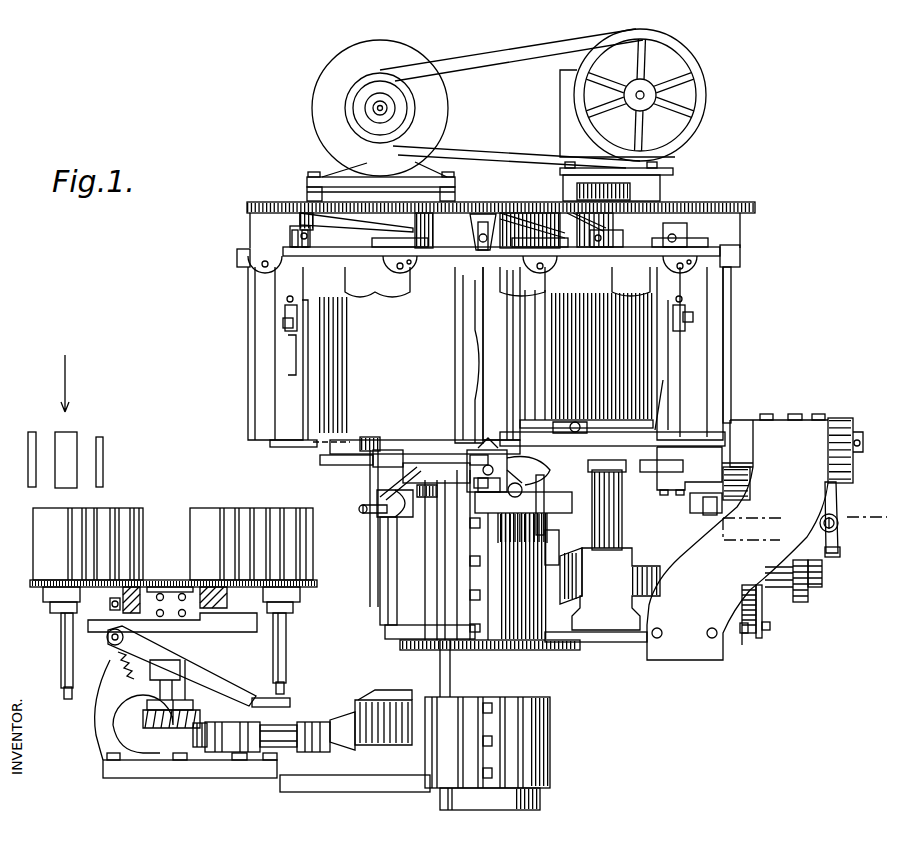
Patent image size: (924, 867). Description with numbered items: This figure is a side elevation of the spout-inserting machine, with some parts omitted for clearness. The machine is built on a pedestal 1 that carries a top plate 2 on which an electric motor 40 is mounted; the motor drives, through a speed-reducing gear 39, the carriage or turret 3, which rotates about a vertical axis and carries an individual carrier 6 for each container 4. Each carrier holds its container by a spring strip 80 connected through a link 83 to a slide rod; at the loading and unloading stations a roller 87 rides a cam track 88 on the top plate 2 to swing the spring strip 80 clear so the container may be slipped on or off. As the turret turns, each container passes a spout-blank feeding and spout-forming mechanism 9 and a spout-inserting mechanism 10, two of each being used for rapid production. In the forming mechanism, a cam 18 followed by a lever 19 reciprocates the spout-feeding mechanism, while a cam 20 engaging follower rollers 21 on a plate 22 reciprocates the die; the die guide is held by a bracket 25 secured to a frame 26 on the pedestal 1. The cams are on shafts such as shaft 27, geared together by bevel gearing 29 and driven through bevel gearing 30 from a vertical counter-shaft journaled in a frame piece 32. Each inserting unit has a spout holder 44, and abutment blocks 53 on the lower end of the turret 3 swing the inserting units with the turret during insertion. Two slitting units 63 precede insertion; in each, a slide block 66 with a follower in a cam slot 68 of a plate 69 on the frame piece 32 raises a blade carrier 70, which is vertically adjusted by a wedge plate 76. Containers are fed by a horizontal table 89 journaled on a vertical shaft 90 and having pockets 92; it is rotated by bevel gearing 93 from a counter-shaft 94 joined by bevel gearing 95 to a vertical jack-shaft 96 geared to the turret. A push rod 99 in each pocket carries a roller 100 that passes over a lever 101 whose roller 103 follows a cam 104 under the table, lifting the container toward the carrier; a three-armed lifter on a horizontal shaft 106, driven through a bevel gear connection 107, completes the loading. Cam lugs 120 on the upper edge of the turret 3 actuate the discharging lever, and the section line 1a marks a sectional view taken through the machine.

The pedestal 1 is at (450, 800).
The section line 1a is at (870, 505).
The top plate 2 is at (262, 201).
The carriage or turret 3 is at (497, 436).
The container 4 is at (757, 398).
The carrier 6 is at (411, 296).
The spout-blank feeding and spout-forming mechanism 9 is at (318, 440).
The spout-inserting mechanism 10 is at (688, 519).
The cam 18 is at (822, 575).
The lever 19 is at (840, 543).
The cam 20 is at (742, 642).
The follower rollers 21 is at (748, 636).
The plate 22 is at (760, 612).
The bracket 25 is at (832, 414).
The frame 26 is at (590, 645).
The shaft 27 is at (758, 608).
The bevel gearing 29 is at (556, 612).
The bevel gearing 30 is at (612, 550).
The frame piece 32 is at (436, 530).
The speed-reducing gear 39 is at (551, 95).
The electric motor 40 is at (456, 109).
The spout holder 44 is at (684, 470).
The abutment blocks 53 is at (576, 422).
The slitting unit 63 is at (470, 448).
The slide block 66 is at (475, 498).
The cam slot 68 is at (528, 478).
The plate 69 is at (522, 490).
The blade carrier 70 is at (468, 462).
The wedge plate 76 is at (474, 482).
The spring strip 80 is at (303, 398).
The link 83 is at (298, 326).
The roller 87 is at (486, 222).
The cam track 88 is at (294, 213).
The table 89 is at (300, 590).
The vertical shaft 90 is at (172, 640).
The pockets 92 is at (134, 520).
The bevel gearing 93 is at (195, 728).
The counter-shaft 94 is at (277, 740).
The bevel gearing 95 is at (376, 726).
The jack-shaft 96 is at (380, 576).
The push rod 99 is at (61, 644).
The roller 100 is at (284, 684).
The lever 101 is at (290, 700).
The roller 103 is at (110, 604).
The cam 104 is at (125, 610).
The horizontal shaft 106 is at (358, 516).
The bevel gear connection 107 is at (398, 476).
The cam lugs 120 is at (422, 254).